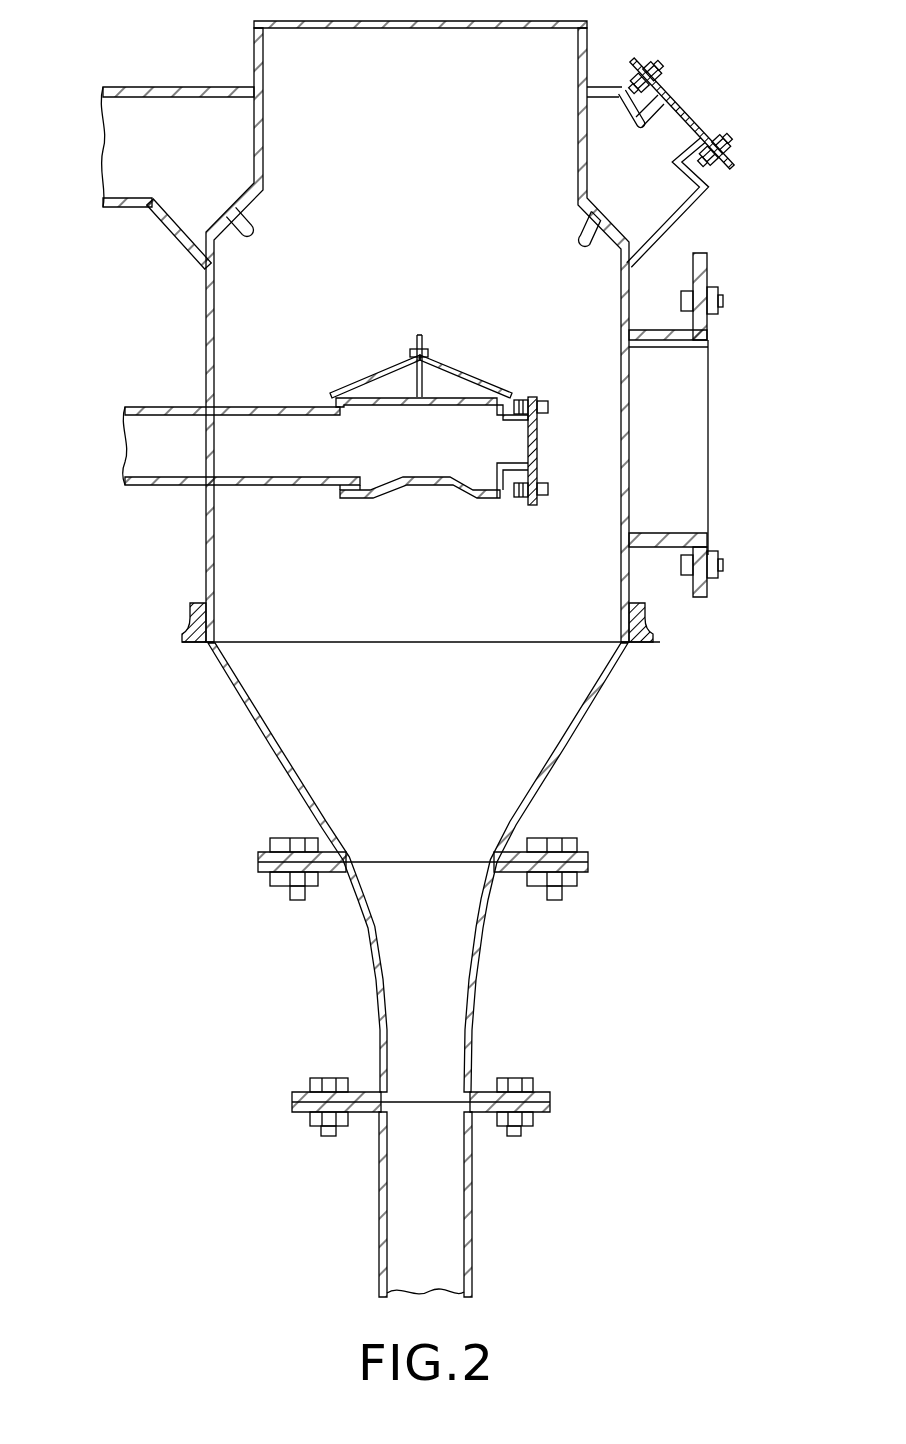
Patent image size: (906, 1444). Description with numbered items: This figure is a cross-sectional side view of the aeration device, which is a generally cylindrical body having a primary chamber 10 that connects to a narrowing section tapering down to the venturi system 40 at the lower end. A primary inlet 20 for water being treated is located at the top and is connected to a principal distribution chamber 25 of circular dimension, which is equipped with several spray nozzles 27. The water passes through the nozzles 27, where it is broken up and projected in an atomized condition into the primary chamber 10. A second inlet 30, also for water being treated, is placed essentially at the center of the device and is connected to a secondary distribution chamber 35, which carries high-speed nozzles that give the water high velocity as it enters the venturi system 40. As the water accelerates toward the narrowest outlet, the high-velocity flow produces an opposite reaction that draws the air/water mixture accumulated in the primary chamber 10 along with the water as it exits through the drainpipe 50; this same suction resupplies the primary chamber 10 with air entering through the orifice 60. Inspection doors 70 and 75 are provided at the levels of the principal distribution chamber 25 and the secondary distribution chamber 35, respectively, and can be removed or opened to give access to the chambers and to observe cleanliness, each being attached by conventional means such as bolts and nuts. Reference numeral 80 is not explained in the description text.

The primary chamber 10 is at (436, 597).
The primary inlet 20 is at (155, 178).
The principal distribution chamber 25 is at (204, 160).
The spray nozzles 27 is at (241, 236).
The second inlet 30 is at (140, 442).
The secondary distribution chamber 35 is at (446, 444).
The venturi system 40 is at (438, 994).
The drainpipe 50 is at (455, 1246).
The orifice 60 is at (296, 21).
The inspection door 70 is at (679, 106).
The inspection door 75 is at (708, 405).
The flange plate 80 is at (538, 449).